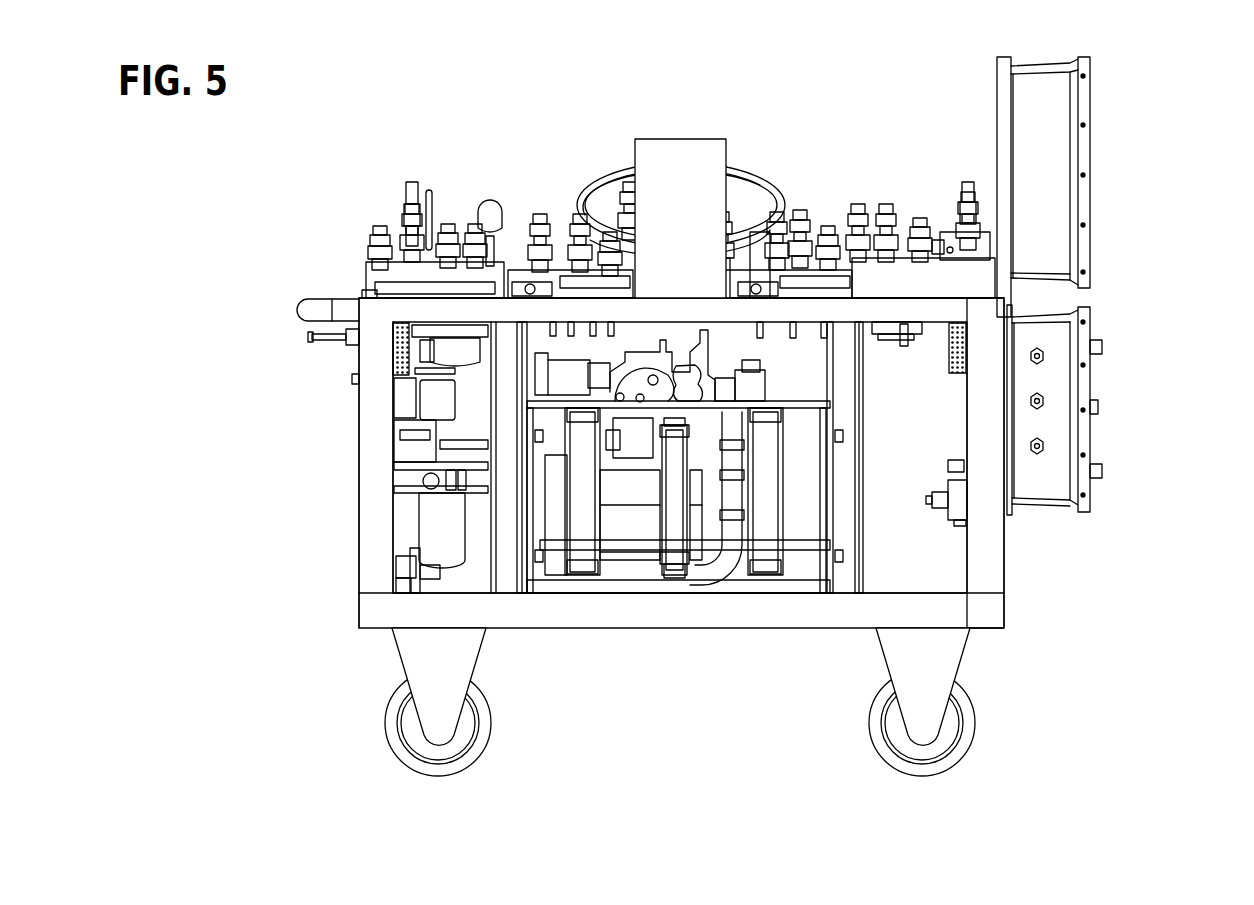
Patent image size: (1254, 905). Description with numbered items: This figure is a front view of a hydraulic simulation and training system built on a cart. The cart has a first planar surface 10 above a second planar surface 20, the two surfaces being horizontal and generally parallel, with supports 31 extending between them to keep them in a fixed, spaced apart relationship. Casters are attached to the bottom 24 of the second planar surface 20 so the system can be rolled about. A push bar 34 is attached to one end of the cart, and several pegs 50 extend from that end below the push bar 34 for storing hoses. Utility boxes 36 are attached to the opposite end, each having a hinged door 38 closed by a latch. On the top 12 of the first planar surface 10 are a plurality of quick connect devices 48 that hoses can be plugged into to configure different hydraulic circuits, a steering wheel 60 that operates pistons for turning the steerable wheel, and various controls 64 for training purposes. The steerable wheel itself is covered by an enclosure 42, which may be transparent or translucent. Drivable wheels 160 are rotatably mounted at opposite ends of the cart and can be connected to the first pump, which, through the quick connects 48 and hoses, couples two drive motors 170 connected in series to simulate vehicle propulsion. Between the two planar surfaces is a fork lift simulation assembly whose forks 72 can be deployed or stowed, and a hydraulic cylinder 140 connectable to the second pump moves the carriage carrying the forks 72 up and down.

The first planar surface 10 is at (410, 310).
The top of the first planar surface 12 is at (362, 296).
The second planar surface 20 is at (985, 603).
The bottom of the second planar surface 24 is at (797, 632).
The supports 31 is at (375, 487).
The push bar 34 is at (310, 300).
The utility boxes 36 is at (1060, 133).
The hinged doors 38 is at (1090, 157).
The enclosure 42 is at (708, 200).
The quick connect devices 48 is at (386, 206).
The pegs 50 is at (310, 337).
The steering wheel 60 is at (748, 168).
The controls 64 is at (490, 213).
The forks 72 is at (582, 548).
The hydraulic cylinder 140 is at (677, 540).
The drivable wheels 160 is at (399, 365).
The drive motors 170 is at (902, 330).